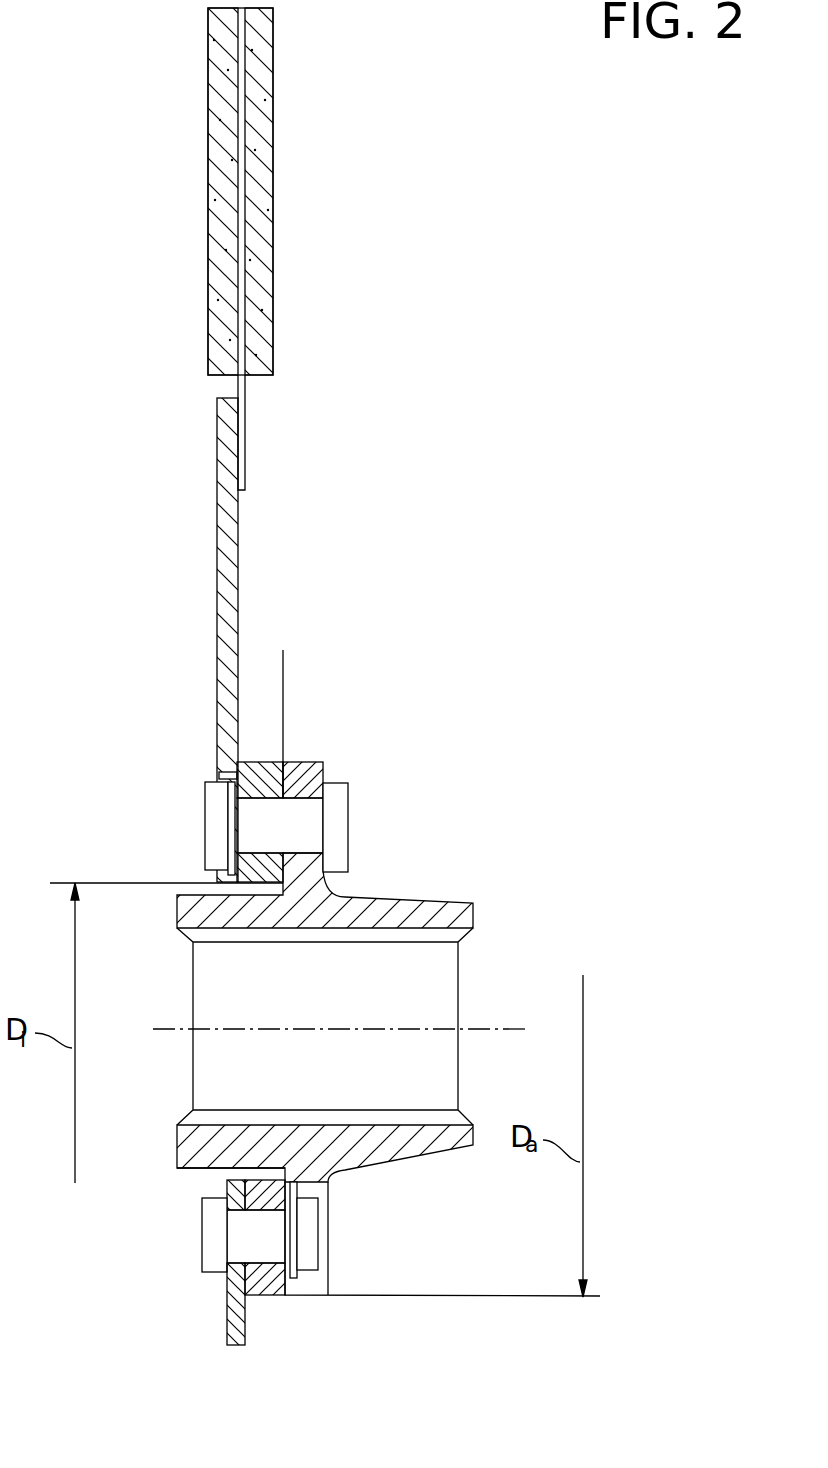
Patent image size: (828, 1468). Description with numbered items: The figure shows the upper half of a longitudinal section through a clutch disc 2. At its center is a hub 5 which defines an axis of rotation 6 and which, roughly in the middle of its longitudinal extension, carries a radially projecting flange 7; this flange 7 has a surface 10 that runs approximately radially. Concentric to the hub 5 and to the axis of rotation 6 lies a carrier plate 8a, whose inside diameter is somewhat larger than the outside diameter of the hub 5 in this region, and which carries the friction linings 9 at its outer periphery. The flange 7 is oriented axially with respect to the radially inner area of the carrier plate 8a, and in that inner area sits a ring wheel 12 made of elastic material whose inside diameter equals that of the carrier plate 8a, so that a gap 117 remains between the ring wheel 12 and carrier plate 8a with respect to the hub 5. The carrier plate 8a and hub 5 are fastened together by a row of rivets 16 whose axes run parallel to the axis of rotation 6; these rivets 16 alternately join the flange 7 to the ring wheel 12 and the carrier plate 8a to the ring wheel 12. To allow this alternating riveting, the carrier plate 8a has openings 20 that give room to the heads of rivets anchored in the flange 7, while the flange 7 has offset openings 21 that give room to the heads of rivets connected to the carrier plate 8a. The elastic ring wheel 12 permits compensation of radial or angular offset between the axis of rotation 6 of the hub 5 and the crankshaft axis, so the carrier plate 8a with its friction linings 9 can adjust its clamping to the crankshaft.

The clutch disc 2 is at (493, 218).
The hub 5 is at (410, 898).
The axis of rotation 6 is at (490, 1032).
The flange 7 is at (312, 781).
The carrier plate 8a is at (225, 597).
The friction linings 9 is at (258, 200).
The surface 10 is at (283, 690).
The ring wheel 12 is at (265, 1290).
The rivets 16 is at (308, 818).
The openings 20 is at (218, 773).
The openings 21 is at (310, 1282).
The gap 117 is at (202, 1179).